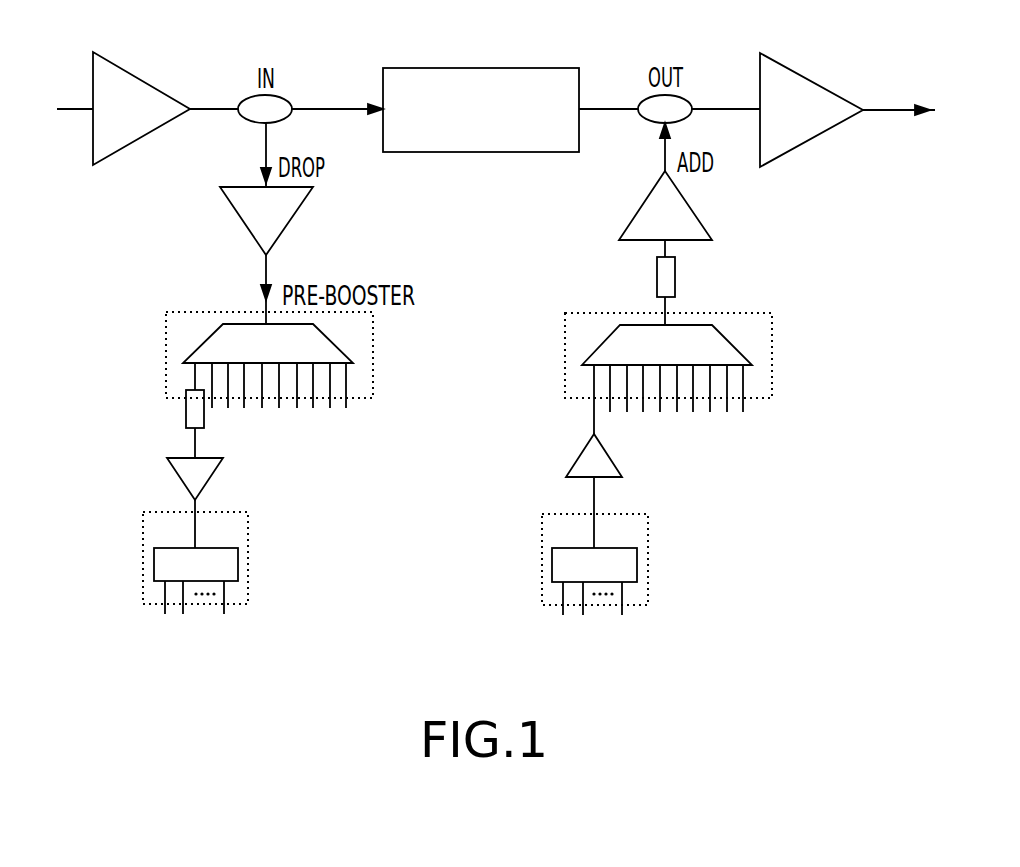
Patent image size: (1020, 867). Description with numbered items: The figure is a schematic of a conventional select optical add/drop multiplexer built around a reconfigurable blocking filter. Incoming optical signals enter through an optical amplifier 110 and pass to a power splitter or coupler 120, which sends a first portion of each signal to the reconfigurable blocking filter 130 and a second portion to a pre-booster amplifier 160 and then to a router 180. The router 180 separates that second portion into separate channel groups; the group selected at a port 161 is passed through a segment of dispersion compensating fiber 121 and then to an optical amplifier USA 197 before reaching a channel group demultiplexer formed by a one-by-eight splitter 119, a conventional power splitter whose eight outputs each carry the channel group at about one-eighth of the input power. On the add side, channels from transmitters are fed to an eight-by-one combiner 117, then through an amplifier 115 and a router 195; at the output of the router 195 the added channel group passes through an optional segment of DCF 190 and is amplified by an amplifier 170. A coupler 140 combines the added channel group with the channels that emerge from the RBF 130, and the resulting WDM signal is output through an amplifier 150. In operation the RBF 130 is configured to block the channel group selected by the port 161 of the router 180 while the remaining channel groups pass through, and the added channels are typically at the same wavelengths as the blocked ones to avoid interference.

The optical amplifier 110 is at (150, 85).
The power splitter or coupler 120 is at (285, 98).
The reconfigurable blocking filter (RBF) 130 is at (451, 68).
The coupler 140 is at (685, 100).
The amplifier 150 is at (813, 83).
The pre-booster amplifier 160 is at (245, 228).
The amplifier 170 is at (698, 210).
The router 180 is at (212, 334).
The port 161 is at (195, 376).
The dispersion compensating fiber (DCF) 121 is at (204, 425).
The optical amplifier USA 197 is at (185, 492).
The 1×8 splitter 119 is at (250, 555).
The DCF 190 is at (657, 275).
The router 195 is at (772, 353).
The amplifier 115 is at (610, 452).
The 8×1 combiner 117 is at (648, 560).